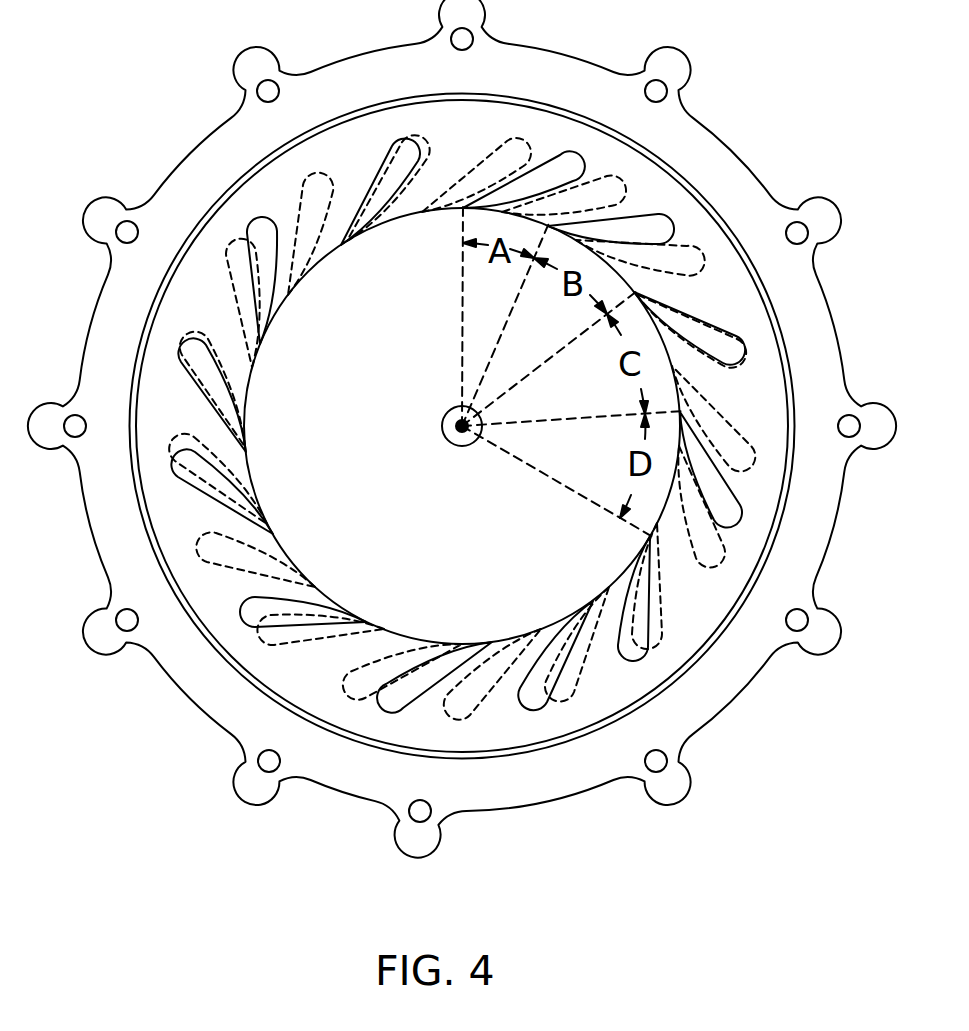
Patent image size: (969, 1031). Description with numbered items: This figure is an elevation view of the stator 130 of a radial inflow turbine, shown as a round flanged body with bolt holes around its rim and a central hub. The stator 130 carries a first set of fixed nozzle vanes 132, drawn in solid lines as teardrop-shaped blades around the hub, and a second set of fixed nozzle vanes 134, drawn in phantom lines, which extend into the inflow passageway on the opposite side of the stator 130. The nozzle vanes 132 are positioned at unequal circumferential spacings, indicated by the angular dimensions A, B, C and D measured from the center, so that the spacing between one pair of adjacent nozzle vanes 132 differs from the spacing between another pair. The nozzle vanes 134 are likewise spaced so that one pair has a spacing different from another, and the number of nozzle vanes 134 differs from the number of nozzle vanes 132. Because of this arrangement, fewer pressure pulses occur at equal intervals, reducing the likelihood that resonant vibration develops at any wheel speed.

The stator 130 is at (220, 125).
The nozzle vanes 132 is at (247, 230).
The nozzle vanes 134 is at (530, 142).